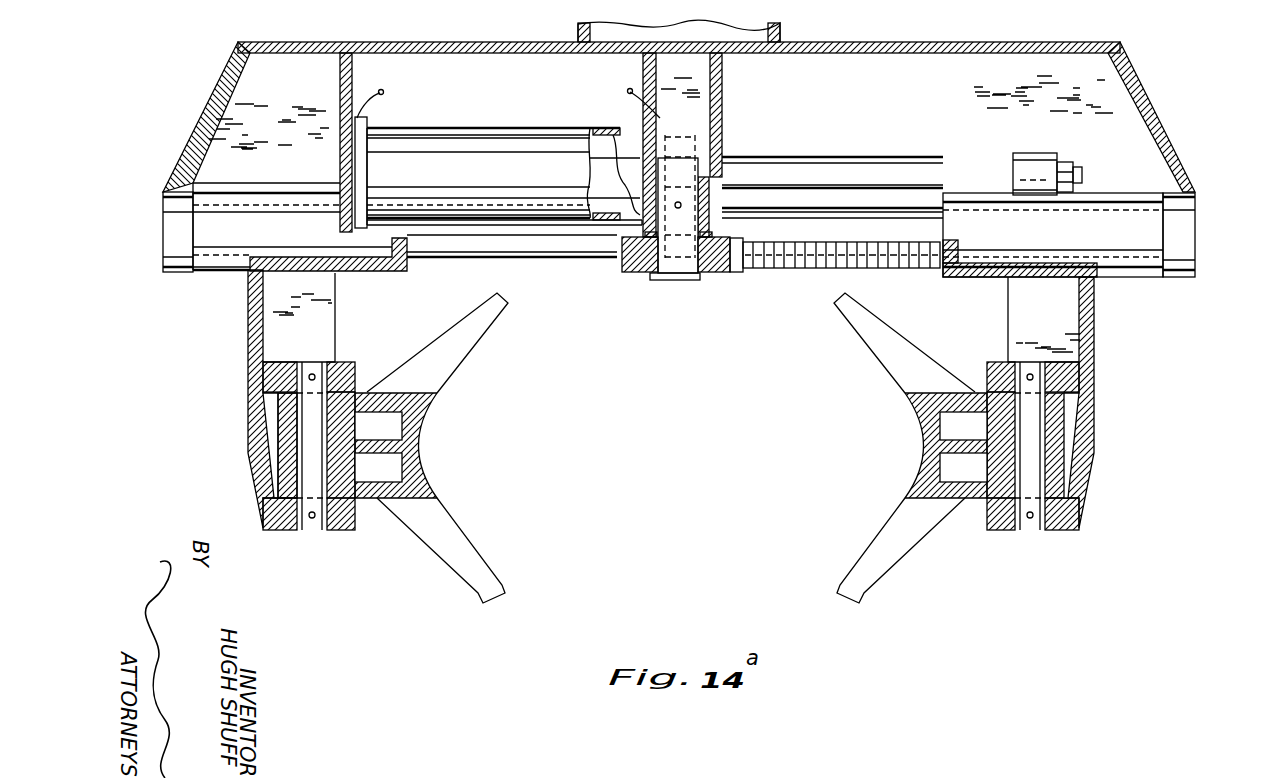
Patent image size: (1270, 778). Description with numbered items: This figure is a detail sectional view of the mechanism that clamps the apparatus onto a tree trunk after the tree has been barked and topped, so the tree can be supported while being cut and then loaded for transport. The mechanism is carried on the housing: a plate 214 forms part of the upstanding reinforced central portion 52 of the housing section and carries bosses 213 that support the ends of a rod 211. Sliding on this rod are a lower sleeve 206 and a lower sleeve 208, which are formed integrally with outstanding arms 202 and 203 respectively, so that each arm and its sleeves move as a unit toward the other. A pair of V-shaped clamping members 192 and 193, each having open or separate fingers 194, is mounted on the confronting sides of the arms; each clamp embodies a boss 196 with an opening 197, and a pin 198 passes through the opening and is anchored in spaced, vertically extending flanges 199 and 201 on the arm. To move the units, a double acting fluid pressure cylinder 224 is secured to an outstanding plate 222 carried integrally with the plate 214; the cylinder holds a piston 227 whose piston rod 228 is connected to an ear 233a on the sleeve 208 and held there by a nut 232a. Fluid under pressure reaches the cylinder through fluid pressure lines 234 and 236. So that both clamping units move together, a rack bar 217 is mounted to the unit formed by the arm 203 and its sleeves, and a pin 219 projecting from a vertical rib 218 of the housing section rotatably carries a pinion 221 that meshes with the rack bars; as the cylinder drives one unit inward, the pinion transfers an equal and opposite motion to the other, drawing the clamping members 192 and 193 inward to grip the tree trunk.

The plate 214 is at (442, 70).
The upstanding reinforced part 52 is at (785, 36).
The outstanding plate 222 is at (353, 78).
The fluid pressure line 234 is at (385, 96).
The fluid pressure line 236 is at (628, 96).
The double acting fluid pressure cylinder 224 is at (488, 150).
The piston 227 is at (612, 174).
The vertical rib 218 is at (723, 118).
The pin 219 is at (680, 262).
The pinion 221 is at (718, 275).
The rack bar 217 is at (886, 258).
The piston rod 228 is at (884, 172).
The ear 233a is at (1043, 152).
The nut 232a is at (1068, 160).
The lower sleeve 208 is at (1140, 237).
The boss 213 is at (1185, 250).
The lower sleeve 206 is at (207, 258).
The rod 211 is at (552, 245).
The arm 202 is at (252, 398).
The arm 203 is at (1095, 390).
The opening 197 is at (298, 456).
The flange 199 is at (352, 360).
The flange 201 is at (357, 524).
The pin 198 is at (312, 531).
The boss 196 is at (353, 392).
The clamping member 193 is at (930, 439).
The clamping member 192 is at (465, 362).
The finger 194 is at (481, 556).